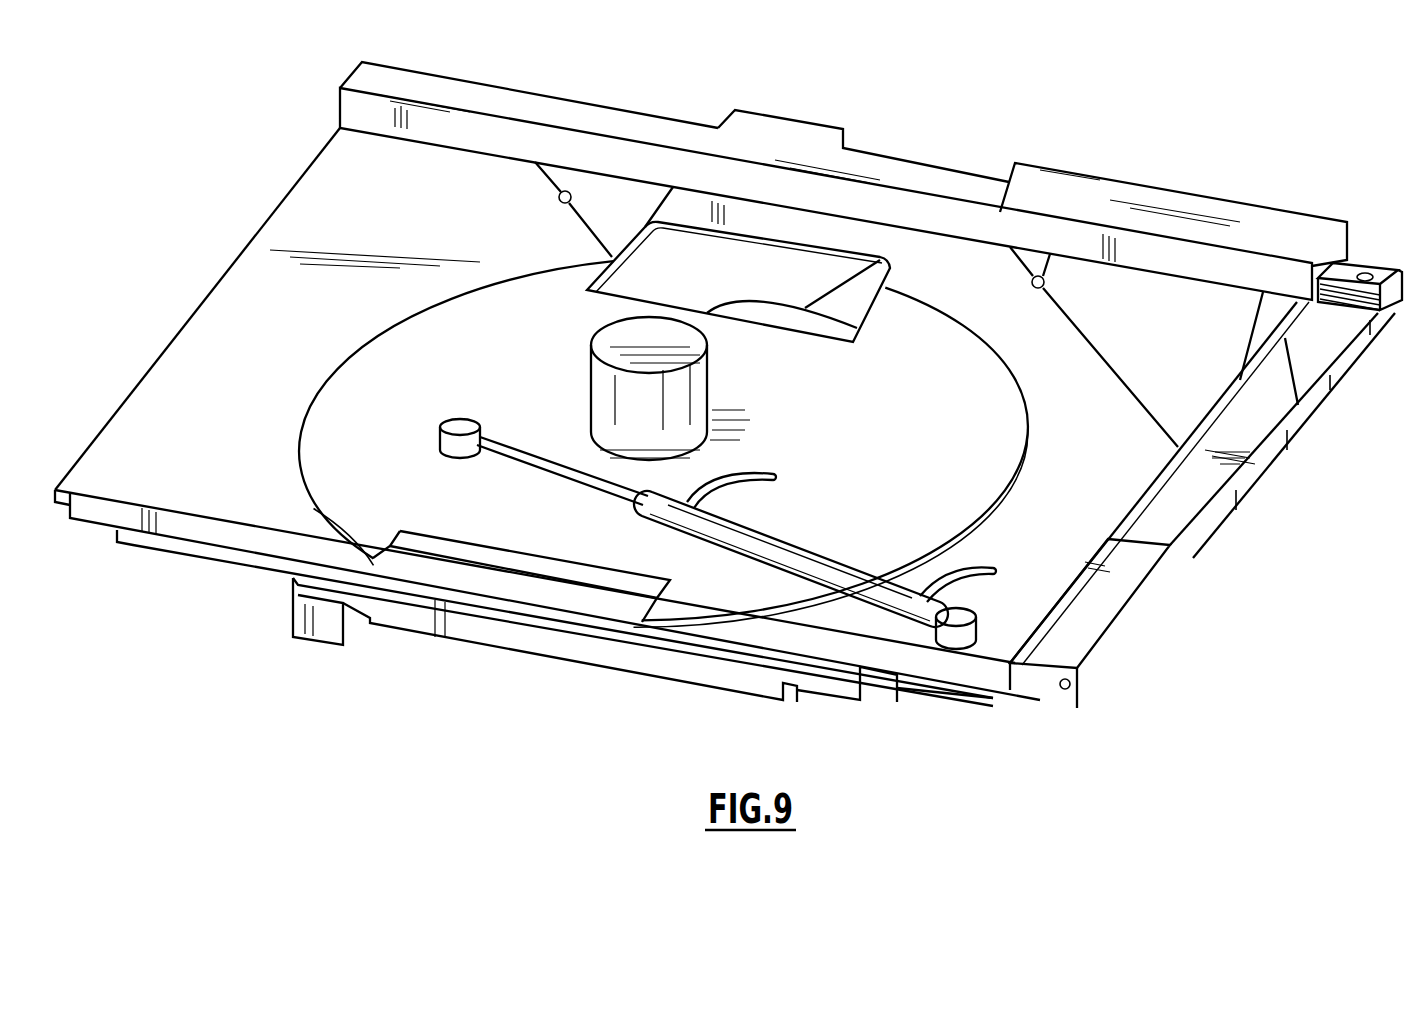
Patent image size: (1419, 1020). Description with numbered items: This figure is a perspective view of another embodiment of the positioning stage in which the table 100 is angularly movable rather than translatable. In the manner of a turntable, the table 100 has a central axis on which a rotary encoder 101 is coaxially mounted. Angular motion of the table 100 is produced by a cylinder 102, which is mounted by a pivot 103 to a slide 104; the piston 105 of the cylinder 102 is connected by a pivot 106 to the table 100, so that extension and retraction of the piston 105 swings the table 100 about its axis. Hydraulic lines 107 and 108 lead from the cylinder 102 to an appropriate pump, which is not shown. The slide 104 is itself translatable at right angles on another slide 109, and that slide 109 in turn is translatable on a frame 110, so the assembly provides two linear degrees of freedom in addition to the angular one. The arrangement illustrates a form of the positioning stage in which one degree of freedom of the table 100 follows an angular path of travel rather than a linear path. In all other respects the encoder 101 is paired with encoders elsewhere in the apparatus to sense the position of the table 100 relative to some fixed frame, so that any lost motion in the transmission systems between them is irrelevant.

The table 100 is at (898, 413).
The rotary encoder 101 is at (596, 340).
The cylinder 102 is at (760, 552).
The pivot 103 is at (962, 612).
The slide 104 is at (1113, 483).
The piston 105 is at (570, 490).
The pivot 106 is at (446, 418).
The hydraulic line 107 is at (965, 565).
The hydraulic line 108 is at (745, 472).
The slide 109 is at (1043, 692).
The frame 110 is at (585, 655).